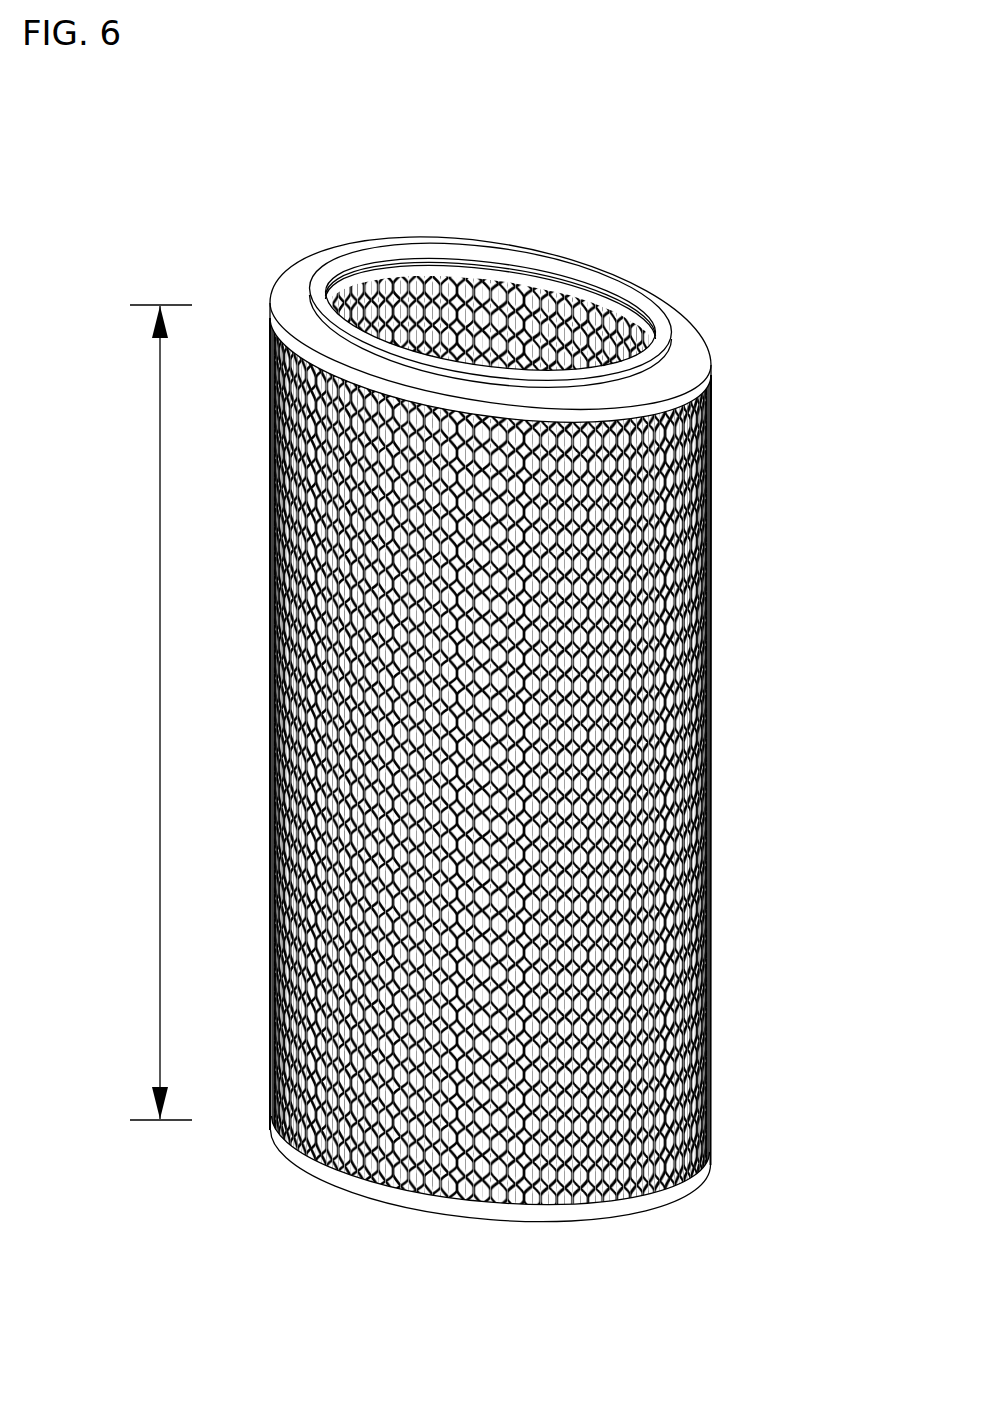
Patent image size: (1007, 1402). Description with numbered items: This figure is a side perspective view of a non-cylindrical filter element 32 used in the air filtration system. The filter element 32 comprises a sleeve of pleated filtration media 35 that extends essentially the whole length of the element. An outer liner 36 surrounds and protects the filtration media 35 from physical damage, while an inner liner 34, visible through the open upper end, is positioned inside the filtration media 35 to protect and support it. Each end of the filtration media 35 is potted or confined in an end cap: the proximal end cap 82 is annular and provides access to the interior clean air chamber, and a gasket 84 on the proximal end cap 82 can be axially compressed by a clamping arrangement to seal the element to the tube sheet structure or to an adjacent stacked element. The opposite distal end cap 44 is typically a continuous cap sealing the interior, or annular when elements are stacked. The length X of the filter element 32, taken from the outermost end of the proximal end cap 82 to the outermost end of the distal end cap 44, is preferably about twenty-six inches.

The filter element 32 is at (450, 202).
The inner liner 34 is at (486, 300).
The filtration media 35 is at (383, 597).
The outer liner 36 is at (344, 672).
The distal end cap 44 is at (287, 1136).
The proximal end cap 82 is at (300, 293).
The gasket 84 is at (334, 262).
The length of filter element X is at (158, 712).